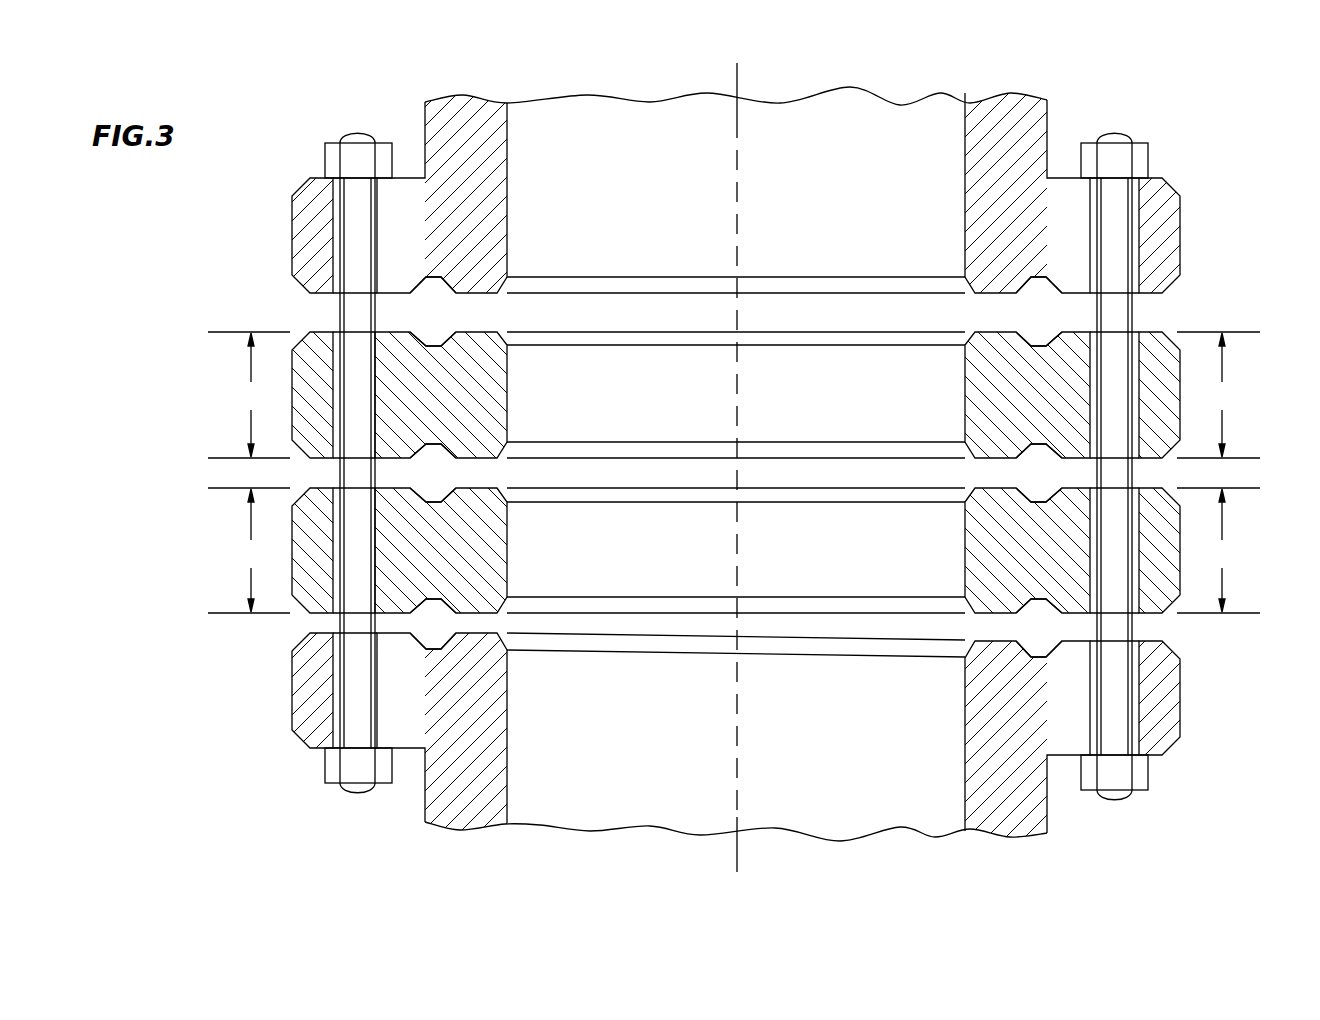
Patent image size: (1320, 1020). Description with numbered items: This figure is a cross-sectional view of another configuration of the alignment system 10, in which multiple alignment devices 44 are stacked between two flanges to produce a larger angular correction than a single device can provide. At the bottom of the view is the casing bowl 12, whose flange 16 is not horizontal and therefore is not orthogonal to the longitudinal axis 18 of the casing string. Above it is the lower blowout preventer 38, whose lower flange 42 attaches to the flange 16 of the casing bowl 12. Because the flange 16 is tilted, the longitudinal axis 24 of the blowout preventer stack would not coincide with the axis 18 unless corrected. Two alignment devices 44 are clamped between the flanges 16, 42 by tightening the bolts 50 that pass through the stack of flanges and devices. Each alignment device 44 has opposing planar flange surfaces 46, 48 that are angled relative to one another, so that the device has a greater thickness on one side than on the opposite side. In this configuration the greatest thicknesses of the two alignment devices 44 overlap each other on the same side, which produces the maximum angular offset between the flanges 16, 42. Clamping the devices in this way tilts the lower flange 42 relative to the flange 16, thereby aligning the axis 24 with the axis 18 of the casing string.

The alignment system 10 is at (762, 451).
The casing bowl 12 is at (423, 820).
The flange 16 is at (1180, 722).
The longitudinal axis 18 is at (737, 848).
The longitudinal axis 24 is at (737, 80).
The lower blowout preventer 38 is at (1047, 120).
The lower flange 42 is at (1180, 240).
The alignment device 44 is at (1150, 327).
The planar flange surface 46 is at (488, 332).
The planar flange surface 48 is at (473, 460).
The bolts 50 is at (352, 132).